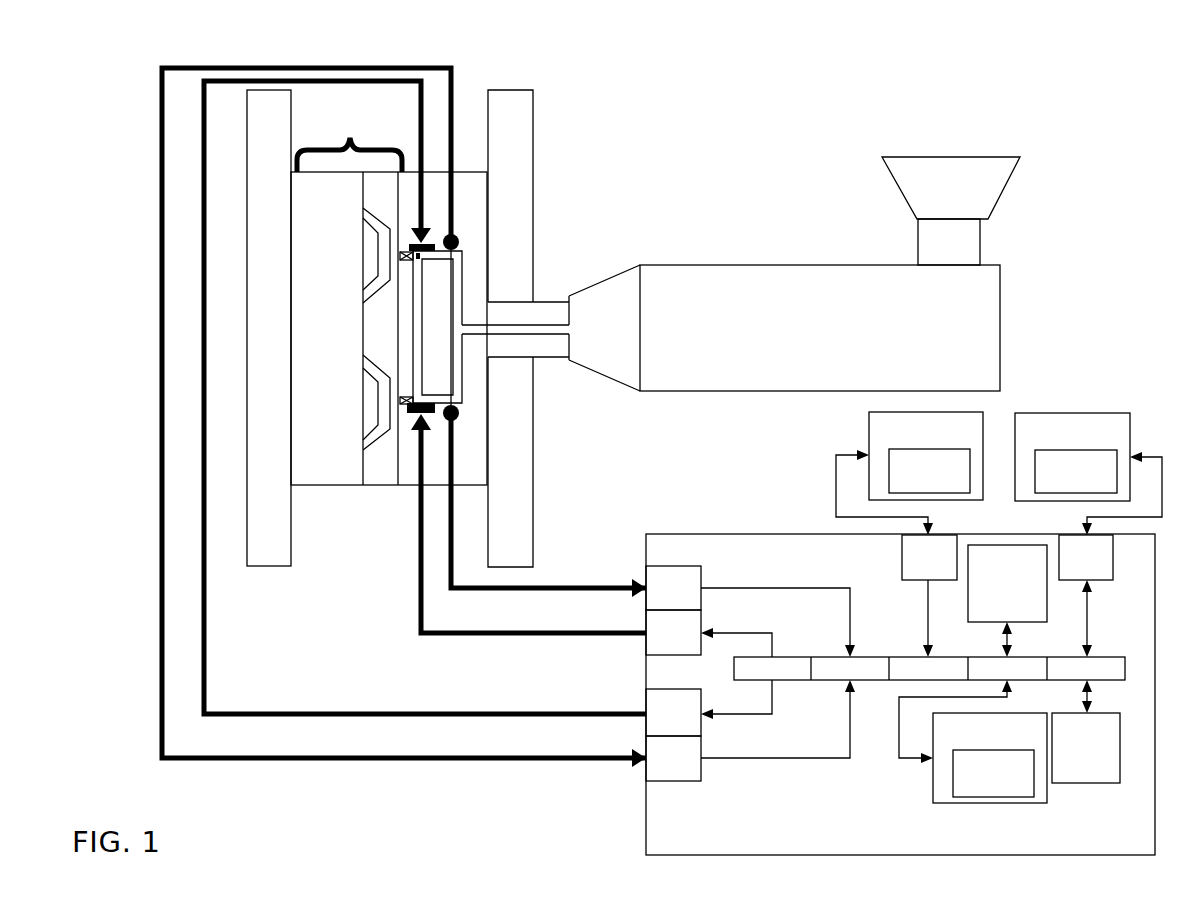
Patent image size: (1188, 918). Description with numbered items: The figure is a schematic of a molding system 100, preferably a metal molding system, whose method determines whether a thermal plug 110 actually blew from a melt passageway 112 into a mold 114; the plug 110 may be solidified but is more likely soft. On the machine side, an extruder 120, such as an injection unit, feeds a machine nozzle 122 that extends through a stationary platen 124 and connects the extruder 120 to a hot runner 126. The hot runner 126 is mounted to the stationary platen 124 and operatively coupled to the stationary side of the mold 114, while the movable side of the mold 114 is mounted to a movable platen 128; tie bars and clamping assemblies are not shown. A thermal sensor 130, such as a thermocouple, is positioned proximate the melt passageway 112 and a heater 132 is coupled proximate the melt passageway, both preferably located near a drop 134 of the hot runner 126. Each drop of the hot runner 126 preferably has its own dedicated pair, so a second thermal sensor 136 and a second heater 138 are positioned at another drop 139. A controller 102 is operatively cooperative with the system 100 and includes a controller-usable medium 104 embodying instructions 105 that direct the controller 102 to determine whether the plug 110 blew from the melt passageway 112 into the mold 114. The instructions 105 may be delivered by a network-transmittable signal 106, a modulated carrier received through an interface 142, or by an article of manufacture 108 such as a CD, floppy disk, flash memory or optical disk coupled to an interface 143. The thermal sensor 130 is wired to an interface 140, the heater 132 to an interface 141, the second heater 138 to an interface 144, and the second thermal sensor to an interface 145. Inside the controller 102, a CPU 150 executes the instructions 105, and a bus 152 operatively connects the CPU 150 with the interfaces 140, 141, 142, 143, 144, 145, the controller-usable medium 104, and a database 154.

The molding system 100 is at (1060, 182).
The controller 102 is at (691, 530).
The controller-usable medium 104 is at (973, 741).
The instructions 105 is at (1003, 623).
The network-transmittable signal 106 is at (1088, 474).
The article of manufacture 108 is at (909, 473).
The plug 110 is at (370, 443).
The melt passageway 112 is at (462, 327).
The mold 114 is at (349, 290).
The extruder 120 is at (723, 318).
The machine nozzle 122 is at (548, 312).
The stationary platen 124 is at (512, 112).
The hot runner 126 is at (473, 200).
The movable platen 128 is at (262, 223).
The thermal sensor 130 is at (455, 420).
The heater 132 is at (427, 400).
The drop 134 is at (423, 400).
The thermal sensor 136 is at (458, 240).
The heater 138 is at (422, 258).
The drop 139 is at (419, 263).
The interface 140 is at (750, 611).
The interface 141 is at (708, 662).
The interface 142 is at (1085, 596).
The interface 143 is at (929, 596).
The interface 144 is at (679, 712).
The interface 145 is at (750, 730).
The CPU 150 is at (1007, 601).
The bus 152 is at (880, 672).
The database 154 is at (1086, 731).